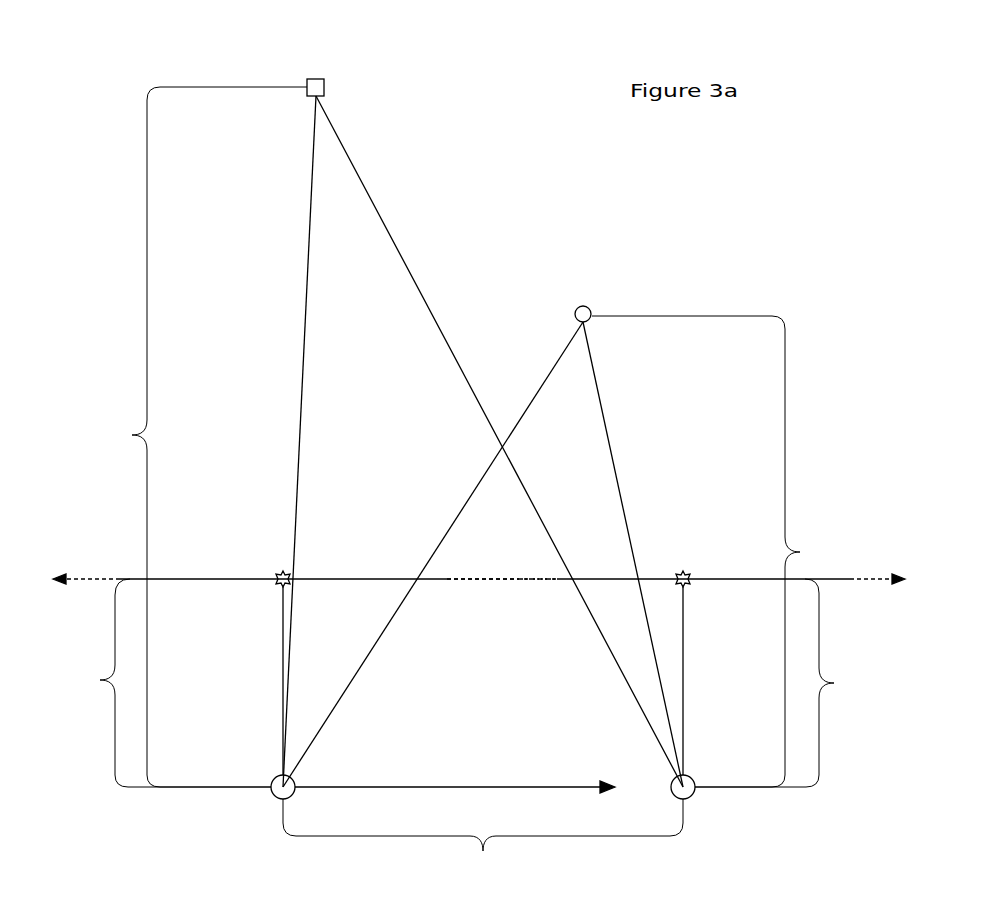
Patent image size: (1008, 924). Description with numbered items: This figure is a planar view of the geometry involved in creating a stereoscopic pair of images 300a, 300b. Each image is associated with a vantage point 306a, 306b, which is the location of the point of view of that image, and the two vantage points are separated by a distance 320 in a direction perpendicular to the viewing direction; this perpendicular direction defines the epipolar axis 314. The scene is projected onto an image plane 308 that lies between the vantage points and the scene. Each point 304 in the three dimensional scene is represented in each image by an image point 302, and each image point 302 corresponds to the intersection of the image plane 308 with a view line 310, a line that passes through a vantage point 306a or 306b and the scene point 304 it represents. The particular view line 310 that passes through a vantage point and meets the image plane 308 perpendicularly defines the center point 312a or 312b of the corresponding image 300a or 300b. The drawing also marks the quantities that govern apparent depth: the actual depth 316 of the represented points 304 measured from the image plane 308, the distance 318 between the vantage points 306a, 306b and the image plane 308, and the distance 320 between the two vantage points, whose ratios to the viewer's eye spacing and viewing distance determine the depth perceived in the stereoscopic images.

The image 300a is at (441, 582).
The image 300b is at (529, 582).
The image point 302 is at (294, 576).
The point 304 is at (324, 86).
The vantage point 306a is at (275, 795).
The vantage point 306b is at (690, 796).
The image plane 308 is at (58, 576).
The view line 310 is at (311, 247).
The center point 312a is at (280, 571).
The center point 312b is at (689, 575).
The epipolar axis 314 is at (560, 785).
The actual depth 316 is at (467, 437).
The distance between vantage points and image plane 318 is at (466, 683).
The distance between vantage points 320 is at (483, 840).